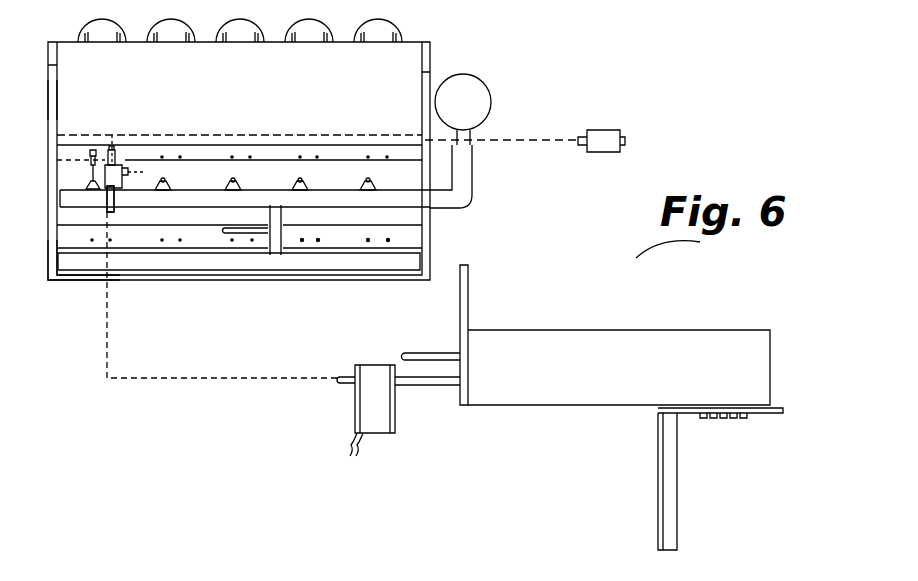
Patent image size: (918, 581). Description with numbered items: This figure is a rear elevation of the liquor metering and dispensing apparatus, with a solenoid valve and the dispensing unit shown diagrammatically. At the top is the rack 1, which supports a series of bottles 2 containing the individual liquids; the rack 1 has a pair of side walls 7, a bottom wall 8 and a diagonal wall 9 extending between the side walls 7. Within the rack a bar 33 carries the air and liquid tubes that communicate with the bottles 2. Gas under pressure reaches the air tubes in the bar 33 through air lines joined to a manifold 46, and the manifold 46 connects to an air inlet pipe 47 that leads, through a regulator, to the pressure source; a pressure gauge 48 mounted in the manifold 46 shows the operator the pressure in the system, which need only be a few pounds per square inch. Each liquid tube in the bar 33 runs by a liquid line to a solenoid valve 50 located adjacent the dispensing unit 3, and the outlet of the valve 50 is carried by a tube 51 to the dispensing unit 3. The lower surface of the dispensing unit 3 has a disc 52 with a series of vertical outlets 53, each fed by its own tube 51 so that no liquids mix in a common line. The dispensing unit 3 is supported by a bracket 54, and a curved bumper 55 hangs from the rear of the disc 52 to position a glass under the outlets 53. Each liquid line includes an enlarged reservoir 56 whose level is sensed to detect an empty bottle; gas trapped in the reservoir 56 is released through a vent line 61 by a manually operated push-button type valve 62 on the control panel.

The rack 1 is at (434, 58).
The bottles 2 is at (240, 37).
The dispensing unit 3 is at (574, 314).
The side walls 7 is at (47, 246).
The bottom wall 8 is at (240, 276).
The diagonal wall 9 is at (63, 101).
The bar 33 is at (346, 146).
The manifold 46 is at (446, 204).
The air inlet pipe 47 is at (227, 229).
The pressure gauge 48 is at (476, 98).
The solenoid valve 50 is at (360, 412).
The tube 51 is at (432, 386).
The disc 52 is at (781, 407).
The outlets 53 is at (708, 420).
The bracket 54 is at (470, 302).
The bumper 55 is at (665, 473).
The reservoir 56 is at (127, 170).
The vent line 61 is at (122, 163).
The push-button type valve 62 is at (622, 103).